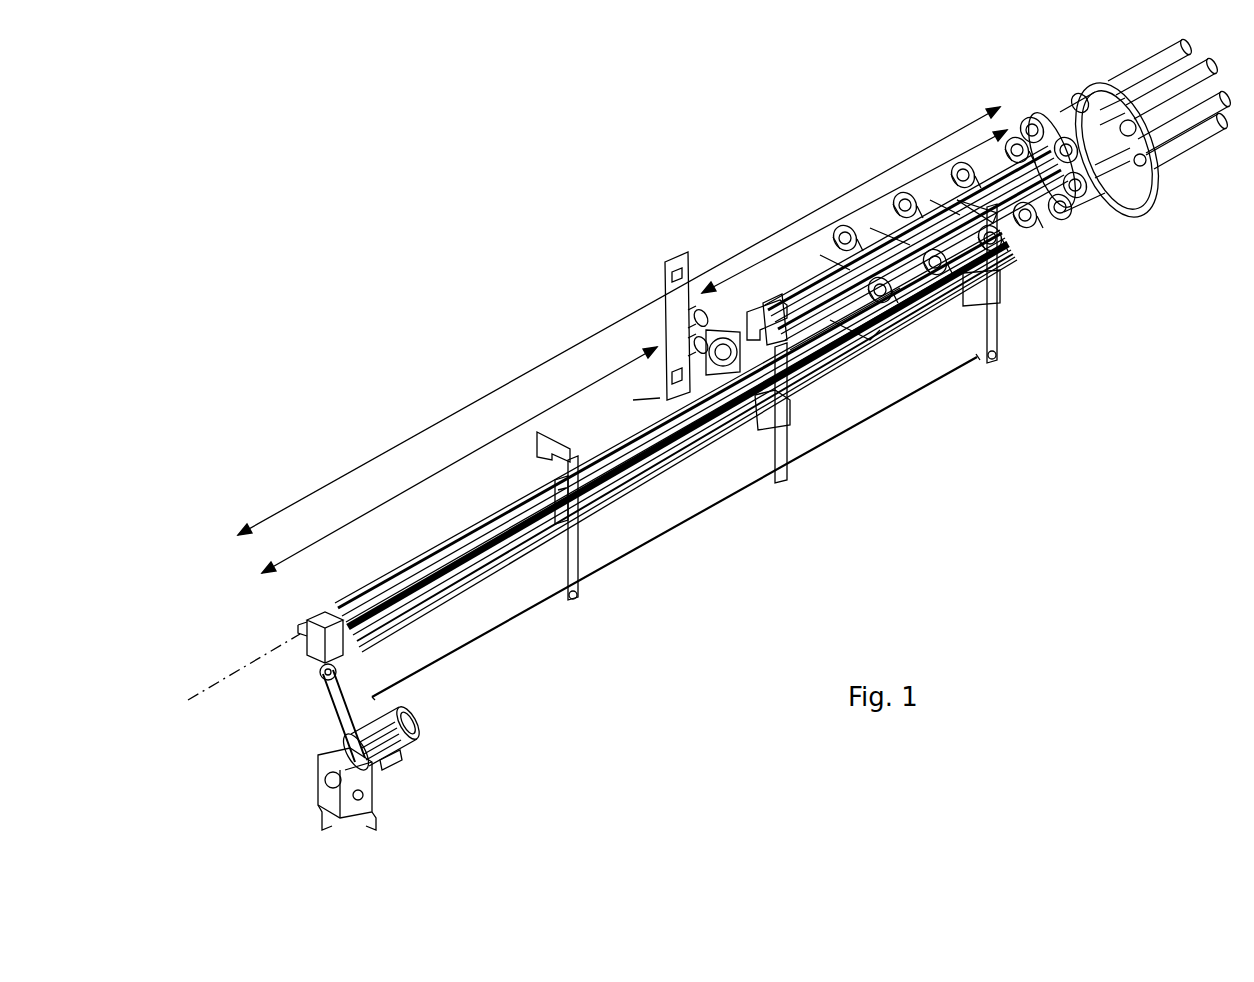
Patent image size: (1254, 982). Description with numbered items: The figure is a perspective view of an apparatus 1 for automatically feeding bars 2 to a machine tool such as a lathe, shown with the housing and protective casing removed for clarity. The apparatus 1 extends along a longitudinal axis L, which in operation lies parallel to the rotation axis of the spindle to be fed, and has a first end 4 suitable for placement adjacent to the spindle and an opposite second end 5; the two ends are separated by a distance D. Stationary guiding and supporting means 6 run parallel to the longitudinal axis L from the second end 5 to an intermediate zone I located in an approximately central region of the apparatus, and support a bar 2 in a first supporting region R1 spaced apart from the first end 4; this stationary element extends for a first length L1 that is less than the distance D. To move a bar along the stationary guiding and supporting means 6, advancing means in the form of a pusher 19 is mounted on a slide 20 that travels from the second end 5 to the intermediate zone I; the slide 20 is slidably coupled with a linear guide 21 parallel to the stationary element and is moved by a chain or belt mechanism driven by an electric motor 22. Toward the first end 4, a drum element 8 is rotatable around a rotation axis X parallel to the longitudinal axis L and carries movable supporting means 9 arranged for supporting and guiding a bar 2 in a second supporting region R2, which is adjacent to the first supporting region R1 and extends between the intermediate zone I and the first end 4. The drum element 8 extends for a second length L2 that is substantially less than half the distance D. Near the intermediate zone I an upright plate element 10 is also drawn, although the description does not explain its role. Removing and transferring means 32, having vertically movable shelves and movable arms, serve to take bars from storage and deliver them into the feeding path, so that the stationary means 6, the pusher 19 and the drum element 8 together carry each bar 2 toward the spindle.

The apparatus 1 is at (493, 188).
The bar 2 is at (520, 500).
The first end 4 is at (1176, 240).
The second end 5 is at (290, 728).
The stationary guiding and supporting means 6 is at (615, 450).
The drum element 8 is at (882, 205).
The movable supporting means 9 is at (1012, 247).
The support plate 10 is at (643, 233).
The pusher 19 is at (310, 620).
The slide 20 is at (303, 625).
The linear guide 21 is at (310, 694).
The electric motor 22 is at (390, 762).
The removing and transferring means 32 is at (680, 413).
The distance D is at (385, 447).
The first length L1 is at (348, 528).
The second length L2 is at (702, 292).
The longitudinal axis L is at (188, 700).
The rotation axis X is at (640, 397).
The intermediate zone I is at (826, 514).
The first supporting region R1 is at (612, 645).
The second supporting region R2 is at (1042, 372).